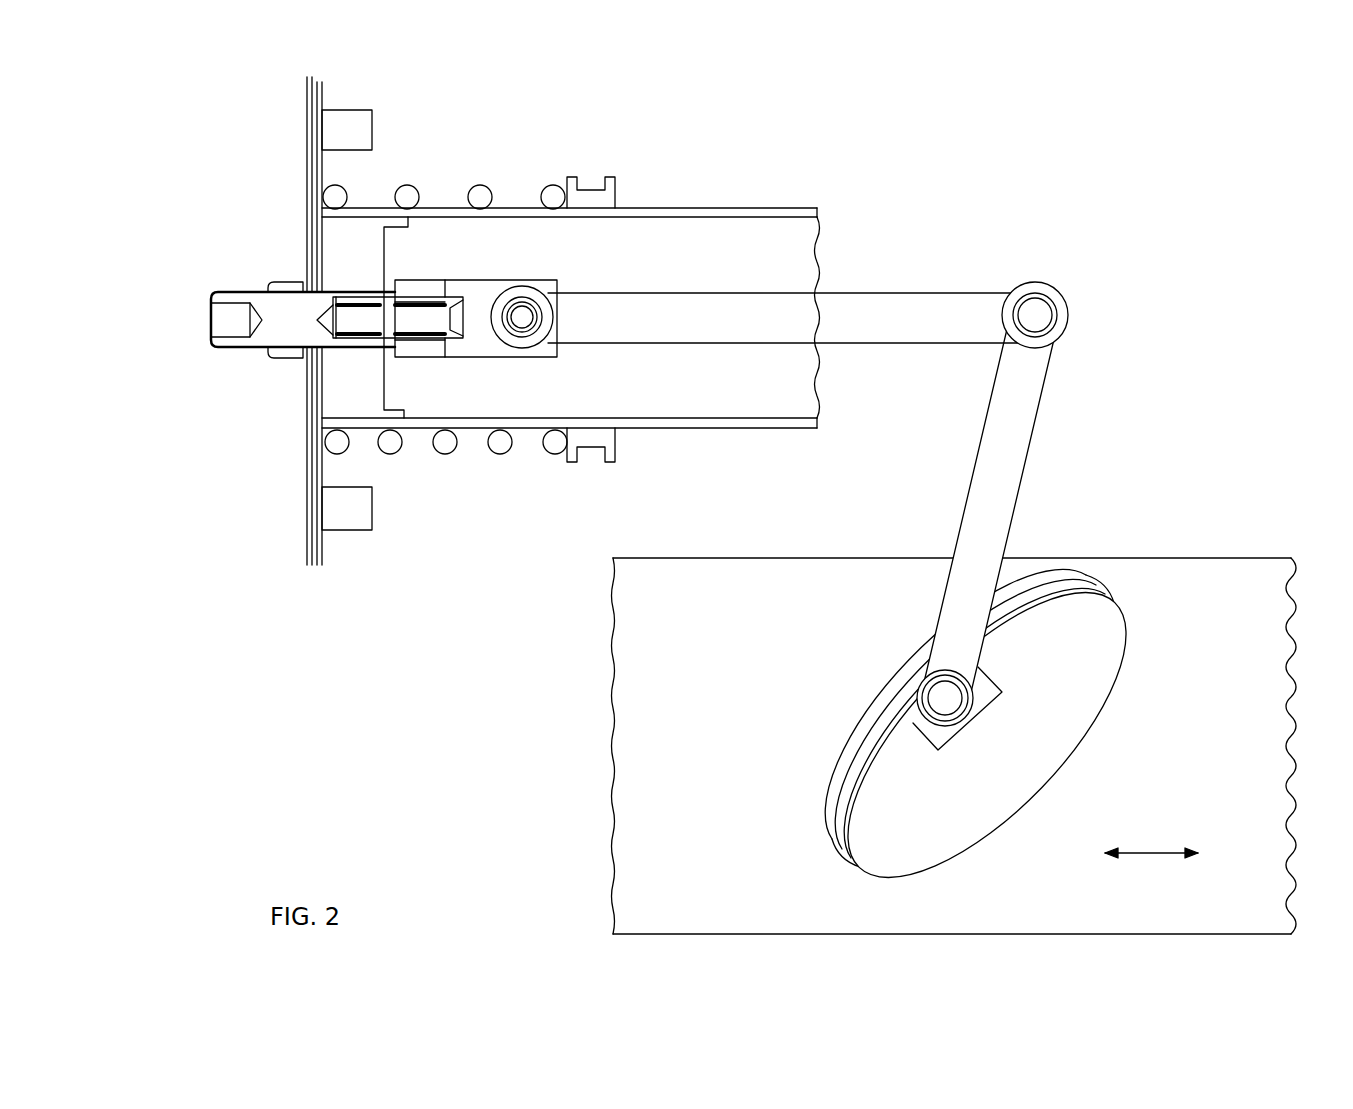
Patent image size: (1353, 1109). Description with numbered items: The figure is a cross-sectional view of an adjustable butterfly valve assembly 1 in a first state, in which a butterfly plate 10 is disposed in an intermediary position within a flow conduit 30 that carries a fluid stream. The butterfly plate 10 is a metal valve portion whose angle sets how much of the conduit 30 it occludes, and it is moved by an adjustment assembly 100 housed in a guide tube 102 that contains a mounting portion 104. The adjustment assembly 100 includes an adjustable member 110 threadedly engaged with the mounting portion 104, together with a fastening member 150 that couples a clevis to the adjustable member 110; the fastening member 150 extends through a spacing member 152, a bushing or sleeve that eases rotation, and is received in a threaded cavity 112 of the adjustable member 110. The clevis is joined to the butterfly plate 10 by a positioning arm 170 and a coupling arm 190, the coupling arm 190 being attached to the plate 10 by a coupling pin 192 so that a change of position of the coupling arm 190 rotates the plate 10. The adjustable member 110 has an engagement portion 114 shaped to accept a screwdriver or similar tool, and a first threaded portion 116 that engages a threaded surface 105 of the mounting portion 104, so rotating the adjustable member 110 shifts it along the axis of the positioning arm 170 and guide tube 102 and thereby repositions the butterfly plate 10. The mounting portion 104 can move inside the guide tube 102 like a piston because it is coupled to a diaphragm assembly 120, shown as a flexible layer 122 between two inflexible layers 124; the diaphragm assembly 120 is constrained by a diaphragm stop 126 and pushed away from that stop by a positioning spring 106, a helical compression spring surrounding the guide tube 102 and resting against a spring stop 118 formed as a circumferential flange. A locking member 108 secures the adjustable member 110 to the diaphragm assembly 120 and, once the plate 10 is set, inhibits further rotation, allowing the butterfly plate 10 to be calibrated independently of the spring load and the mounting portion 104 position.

The adjustable butterfly valve assembly 1 is at (176, 206).
The butterfly plate 10 is at (1115, 655).
The flow conduit 30 is at (1045, 935).
The adjustment assembly 100 is at (210, 462).
The guide tube 102 is at (725, 208).
The mounting portion 104 is at (332, 420).
The threaded surface 105 is at (354, 358).
The positioning spring 106 is at (410, 200).
The locking member 108 is at (272, 362).
The adjustable member 110 is at (215, 347).
The cavity 112 is at (318, 318).
The engagement portion 114 is at (215, 314).
The first threaded portion 116 is at (330, 337).
The spring stop 118 is at (590, 190).
The diaphragm assembly 120 is at (239, 313).
The flexible layer 122 is at (307, 126).
The inflexible layers 124 is at (322, 182).
The diaphragm stop 126 is at (364, 127).
The fastening member 150 is at (453, 336).
The spacing member 152 is at (420, 340).
The positioning arm 170 is at (728, 300).
The coupling arm 190 is at (1020, 437).
The coupling pin 192 is at (950, 705).